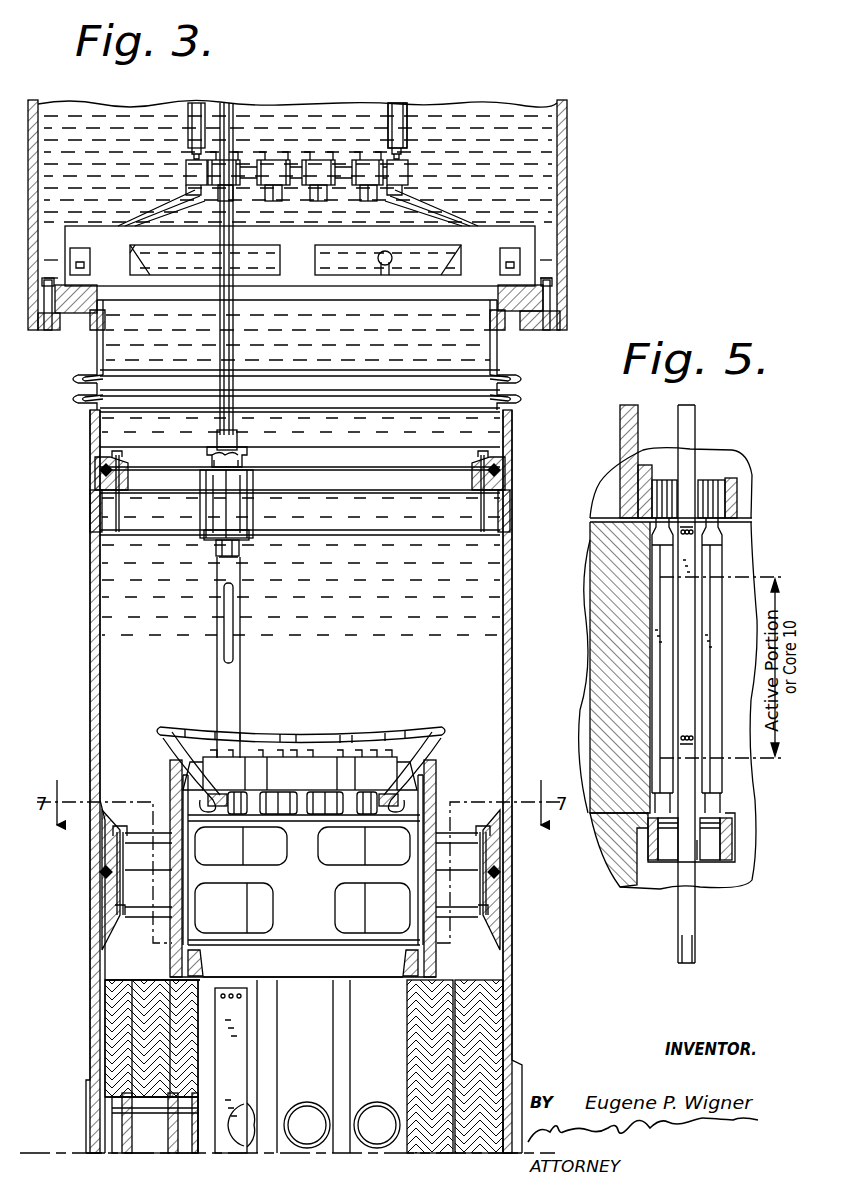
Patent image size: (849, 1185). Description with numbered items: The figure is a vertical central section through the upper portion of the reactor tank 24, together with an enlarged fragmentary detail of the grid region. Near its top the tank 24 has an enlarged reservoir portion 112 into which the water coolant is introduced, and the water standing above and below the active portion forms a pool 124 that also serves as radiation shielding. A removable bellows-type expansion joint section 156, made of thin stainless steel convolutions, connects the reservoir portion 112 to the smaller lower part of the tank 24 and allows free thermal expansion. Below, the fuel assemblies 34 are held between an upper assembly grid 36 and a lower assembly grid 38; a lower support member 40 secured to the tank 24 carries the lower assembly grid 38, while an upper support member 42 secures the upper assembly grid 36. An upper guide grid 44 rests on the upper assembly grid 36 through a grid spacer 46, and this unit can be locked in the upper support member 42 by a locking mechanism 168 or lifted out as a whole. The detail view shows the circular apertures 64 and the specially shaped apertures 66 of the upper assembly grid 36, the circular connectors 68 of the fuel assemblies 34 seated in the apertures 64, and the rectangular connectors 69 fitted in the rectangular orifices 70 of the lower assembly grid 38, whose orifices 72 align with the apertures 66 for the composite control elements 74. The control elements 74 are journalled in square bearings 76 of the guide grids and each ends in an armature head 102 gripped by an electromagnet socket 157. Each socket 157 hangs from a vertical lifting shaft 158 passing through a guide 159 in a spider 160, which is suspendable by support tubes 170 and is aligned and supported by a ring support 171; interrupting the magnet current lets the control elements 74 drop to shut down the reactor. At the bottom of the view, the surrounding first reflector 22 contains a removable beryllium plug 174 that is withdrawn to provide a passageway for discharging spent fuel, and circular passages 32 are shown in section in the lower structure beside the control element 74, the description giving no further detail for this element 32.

In FIG. 3, the first reflector 22 is at (470, 1015).
In FIG. 5, the first reflector 22 is at (608, 580).
In FIG. 3, the tank 24 is at (562, 282).
In FIG. 3, the coolant pipe 32 is at (388, 1108).
In FIG. 5, the fuel assembly 34 is at (715, 565).
In FIG. 3, the upper assembly grid 36 is at (314, 972).
In FIG. 5, the upper assembly grid 36 is at (724, 478).
In FIG. 5, the lower assembly grid 38 is at (728, 857).
In FIG. 5, the lower support member 40 is at (618, 843).
In FIG. 3, the upper support member 42 is at (436, 790).
In FIG. 5, the upper support member 42 is at (620, 432).
In FIG. 3, the upper guide grid 44 is at (300, 765).
In FIG. 3, the grid spacer 46 is at (314, 900).
In FIG. 5, the circular aperture 64 is at (640, 492).
In FIG. 5, the aperture 66 is at (710, 480).
In FIG. 5, the circular connector 68 is at (660, 480).
In FIG. 5, the rectangular connector 69 is at (725, 832).
In FIG. 5, the rectangular orifice 70 is at (730, 845).
In FIG. 5, the orifice 72 is at (705, 860).
In FIG. 3, the composite control element 74 is at (247, 1025).
In FIG. 5, the composite control element 74 is at (686, 906).
In FIG. 3, the bearing 76 is at (325, 810).
In FIG. 3, the armature head 102 is at (242, 546).
In FIG. 3, the reservoir portion 112 is at (552, 178).
In FIG. 3, the pool 124 is at (548, 133).
In FIG. 3, the expansion joint section 156 is at (524, 380).
In FIG. 3, the socket 157 is at (252, 508).
In FIG. 3, the lifting shaft 158 is at (238, 333).
In FIG. 3, the guide 159 is at (235, 165).
In FIG. 3, the spider 160 is at (430, 198).
In FIG. 3, the locking mechanism 168 is at (350, 740).
In FIG. 3, the support tube 170 is at (396, 125).
In FIG. 3, the ring support 171 is at (530, 236).
In FIG. 3, the beryllium plug 174 is at (156, 980).